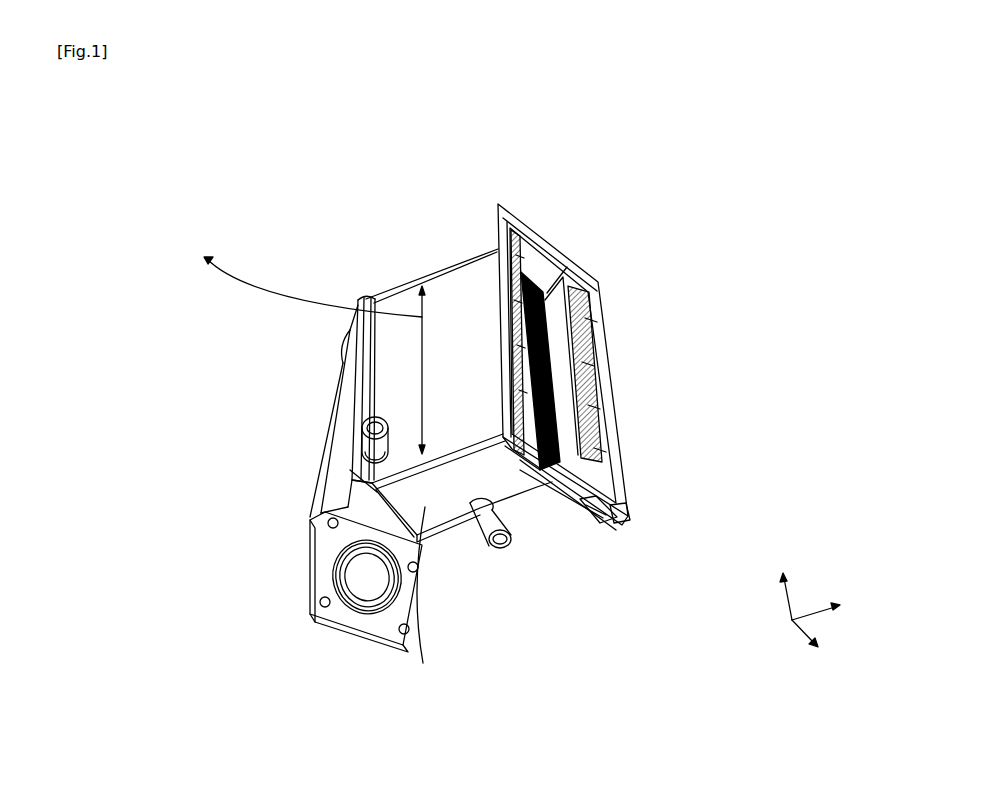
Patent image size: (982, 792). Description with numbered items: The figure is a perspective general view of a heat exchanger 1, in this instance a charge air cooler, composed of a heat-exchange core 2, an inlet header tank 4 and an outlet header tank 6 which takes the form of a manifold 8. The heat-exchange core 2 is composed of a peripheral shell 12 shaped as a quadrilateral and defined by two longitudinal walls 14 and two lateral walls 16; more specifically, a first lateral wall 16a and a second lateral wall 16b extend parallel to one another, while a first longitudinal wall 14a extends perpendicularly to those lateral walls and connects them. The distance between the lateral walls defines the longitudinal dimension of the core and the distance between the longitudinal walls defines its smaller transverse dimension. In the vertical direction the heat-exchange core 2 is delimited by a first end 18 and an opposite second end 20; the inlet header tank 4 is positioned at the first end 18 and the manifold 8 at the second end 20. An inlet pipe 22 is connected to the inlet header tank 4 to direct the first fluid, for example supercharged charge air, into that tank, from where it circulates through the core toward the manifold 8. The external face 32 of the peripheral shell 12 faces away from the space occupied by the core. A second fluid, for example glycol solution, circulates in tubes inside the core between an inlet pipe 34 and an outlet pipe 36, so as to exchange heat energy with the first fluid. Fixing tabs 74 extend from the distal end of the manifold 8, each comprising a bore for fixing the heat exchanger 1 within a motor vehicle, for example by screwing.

The heat exchanger 1 is at (690, 220).
The heat-exchange core 2 is at (455, 272).
The inlet header tank 4 is at (310, 517).
The outlet header tank 6 is at (600, 421).
The manifold 8 is at (559, 510).
The peripheral shell 12 is at (427, 512).
The longitudinal walls 14 is at (363, 366).
The first longitudinal wall 14a is at (433, 318).
The lateral walls 16 is at (501, 417).
The first lateral wall 16a is at (475, 500).
The second lateral wall 16b is at (438, 287).
The first end 18 is at (347, 395).
The second end 20 is at (492, 548).
The inlet pipe 22 is at (313, 583).
The external face 32 is at (422, 331).
The inlet pipe 34 is at (365, 458).
The outlet pipe 36 is at (533, 490).
The fixing tab 74 is at (598, 362).